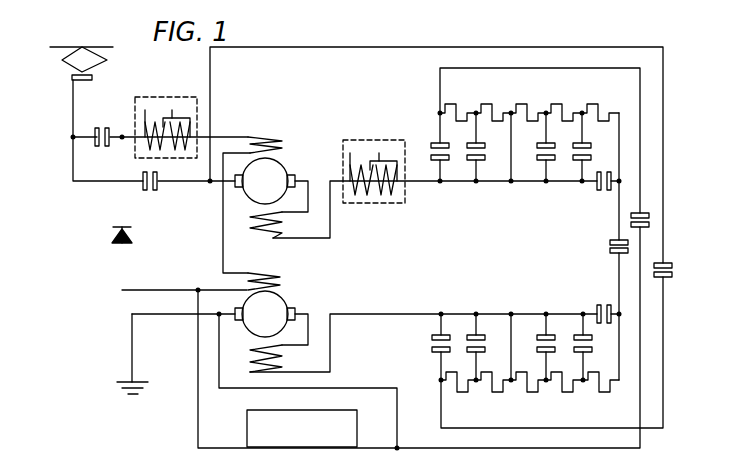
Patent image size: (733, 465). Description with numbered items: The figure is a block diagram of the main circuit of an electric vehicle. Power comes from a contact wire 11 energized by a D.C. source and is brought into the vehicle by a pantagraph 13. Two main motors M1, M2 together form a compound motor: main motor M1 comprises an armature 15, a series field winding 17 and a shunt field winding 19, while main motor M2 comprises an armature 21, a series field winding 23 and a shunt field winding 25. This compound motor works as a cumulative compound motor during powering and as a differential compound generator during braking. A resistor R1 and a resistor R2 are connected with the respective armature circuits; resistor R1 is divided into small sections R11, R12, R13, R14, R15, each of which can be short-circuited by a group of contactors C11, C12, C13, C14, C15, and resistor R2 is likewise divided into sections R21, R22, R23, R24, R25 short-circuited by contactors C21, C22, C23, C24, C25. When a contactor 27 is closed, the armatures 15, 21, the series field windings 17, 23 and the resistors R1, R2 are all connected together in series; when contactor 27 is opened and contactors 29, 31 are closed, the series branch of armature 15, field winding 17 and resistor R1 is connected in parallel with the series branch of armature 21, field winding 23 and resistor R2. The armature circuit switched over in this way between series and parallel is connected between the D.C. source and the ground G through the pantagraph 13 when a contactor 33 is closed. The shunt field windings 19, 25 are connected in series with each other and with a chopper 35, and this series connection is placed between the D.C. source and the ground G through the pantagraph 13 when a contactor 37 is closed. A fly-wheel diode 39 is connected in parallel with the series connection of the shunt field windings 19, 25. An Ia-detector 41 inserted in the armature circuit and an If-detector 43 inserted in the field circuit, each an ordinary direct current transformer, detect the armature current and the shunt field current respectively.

The contact wire 11 is at (102, 56).
The pantagraph 13 is at (76, 72).
The armature 15 is at (287, 168).
The series field winding 17 is at (276, 240).
The shunt field winding 19 is at (262, 113).
The armature 21 is at (282, 292).
The series field winding 23 is at (250, 370).
The shunt field winding 25 is at (247, 275).
The contactor 27 is at (608, 248).
The contactor 29 is at (645, 208).
The contactor 31 is at (672, 270).
The contactor 33 is at (150, 192).
The chopper 35 is at (363, 414).
The contactor 37 is at (100, 128).
The fly-wheel diode 39 is at (116, 237).
The Ia-detector 41 is at (396, 140).
The If-detector 43 is at (187, 97).
The resistor R1 is at (422, 94).
The resistor R2 is at (428, 420).
The main motor M1 is at (315, 156).
The main motor M2 is at (347, 309).
The ground G is at (118, 357).
The resistor section R11 is at (524, 104).
The resistor section R12 is at (559, 104).
The resistor section R13 is at (595, 104).
The resistor section R14 is at (488, 104).
The resistor section R15 is at (452, 104).
The resistor section R21 is at (533, 393).
The resistor section R22 is at (569, 393).
The resistor section R23 is at (606, 393).
The resistor section R24 is at (498, 393).
The resistor section R25 is at (462, 393).
The contactor C11 is at (538, 184).
The contactor C12 is at (574, 184).
The contactor C13 is at (604, 192).
The contactor C14 is at (470, 186).
The contactor C15 is at (432, 186).
The contactor C21 is at (542, 330).
The contactor C22 is at (578, 330).
The contactor C23 is at (602, 304).
The contactor C24 is at (472, 330).
The contactor C25 is at (436, 330).